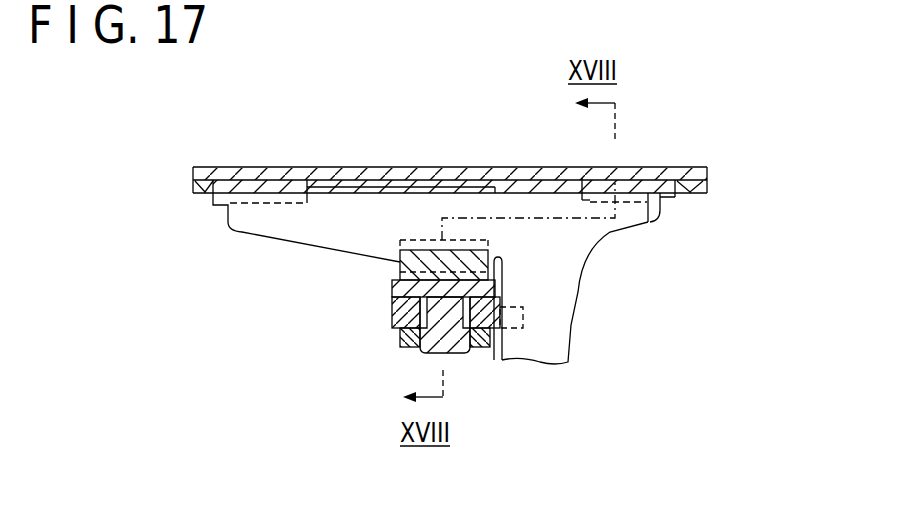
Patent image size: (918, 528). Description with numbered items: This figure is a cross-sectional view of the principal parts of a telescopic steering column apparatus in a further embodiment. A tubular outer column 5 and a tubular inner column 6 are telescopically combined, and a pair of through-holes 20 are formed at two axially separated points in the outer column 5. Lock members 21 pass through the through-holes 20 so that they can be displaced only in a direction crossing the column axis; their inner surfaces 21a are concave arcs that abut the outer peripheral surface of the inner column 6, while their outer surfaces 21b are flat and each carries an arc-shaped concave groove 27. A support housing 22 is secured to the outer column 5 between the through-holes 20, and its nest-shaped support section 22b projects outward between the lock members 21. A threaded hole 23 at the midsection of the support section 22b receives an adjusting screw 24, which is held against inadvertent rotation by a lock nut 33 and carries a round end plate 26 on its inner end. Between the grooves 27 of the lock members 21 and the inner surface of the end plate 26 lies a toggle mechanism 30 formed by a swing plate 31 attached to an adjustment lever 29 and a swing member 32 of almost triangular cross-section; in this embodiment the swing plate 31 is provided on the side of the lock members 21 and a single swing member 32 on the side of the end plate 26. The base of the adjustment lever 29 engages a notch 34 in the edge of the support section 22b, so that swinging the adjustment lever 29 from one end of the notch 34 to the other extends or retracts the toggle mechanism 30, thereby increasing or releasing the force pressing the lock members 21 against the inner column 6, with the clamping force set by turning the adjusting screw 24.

The outer column 5 is at (453, 183).
The inner column 6 is at (430, 170).
The through-holes 20 is at (213, 192).
The lock members 21 is at (258, 192).
The inner surfaces 21a is at (283, 178).
The outer surfaces 21b is at (607, 223).
The support housing 22 is at (397, 325).
The support section 22b is at (393, 312).
The threaded hole 23 is at (437, 352).
The adjusting screw 24 is at (455, 353).
The end plate 26 is at (393, 287).
The concave groove 27 is at (643, 226).
The adjustment lever 29 is at (572, 300).
The toggle mechanism 30 is at (368, 297).
The swing plate 31 is at (514, 207).
The swing member 32 is at (402, 250).
The lock nut 33 is at (398, 338).
The notch 34 is at (500, 320).